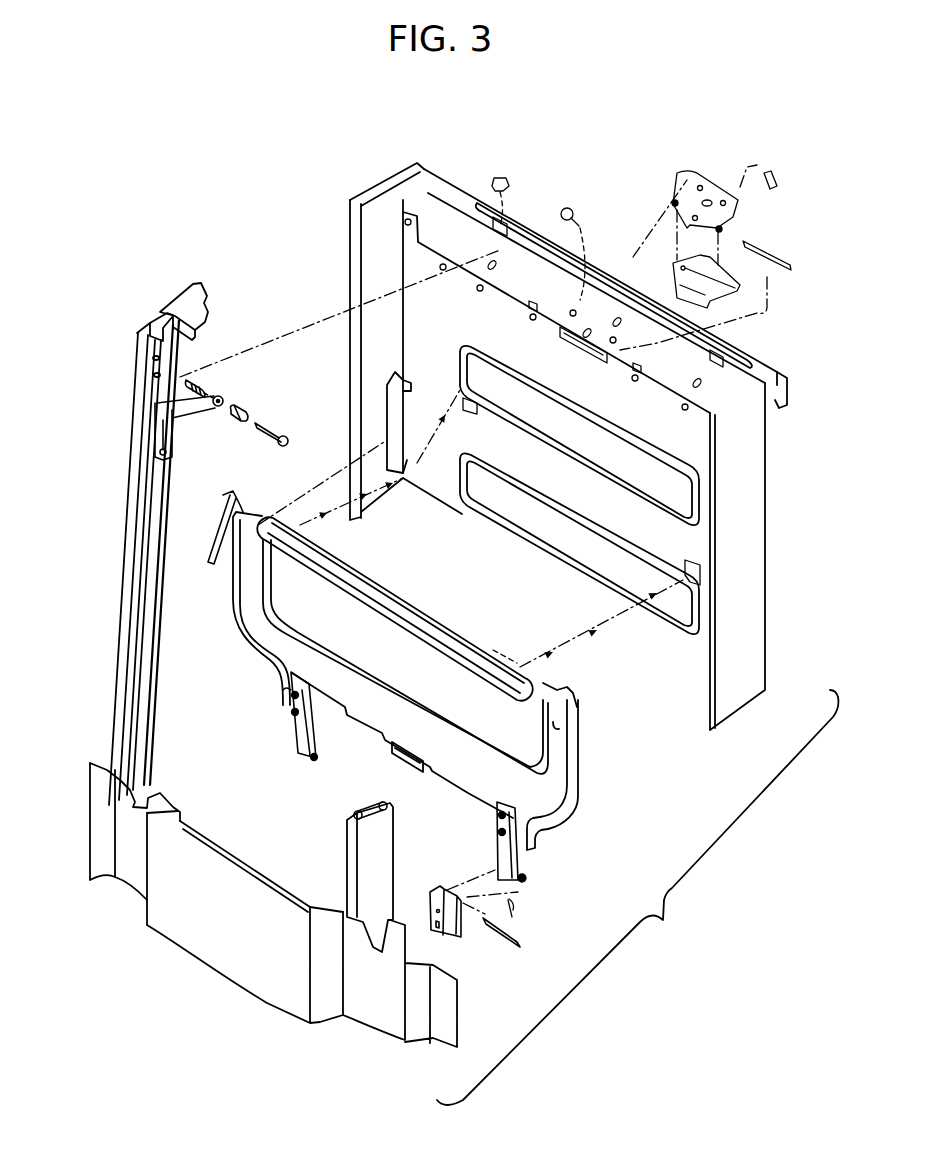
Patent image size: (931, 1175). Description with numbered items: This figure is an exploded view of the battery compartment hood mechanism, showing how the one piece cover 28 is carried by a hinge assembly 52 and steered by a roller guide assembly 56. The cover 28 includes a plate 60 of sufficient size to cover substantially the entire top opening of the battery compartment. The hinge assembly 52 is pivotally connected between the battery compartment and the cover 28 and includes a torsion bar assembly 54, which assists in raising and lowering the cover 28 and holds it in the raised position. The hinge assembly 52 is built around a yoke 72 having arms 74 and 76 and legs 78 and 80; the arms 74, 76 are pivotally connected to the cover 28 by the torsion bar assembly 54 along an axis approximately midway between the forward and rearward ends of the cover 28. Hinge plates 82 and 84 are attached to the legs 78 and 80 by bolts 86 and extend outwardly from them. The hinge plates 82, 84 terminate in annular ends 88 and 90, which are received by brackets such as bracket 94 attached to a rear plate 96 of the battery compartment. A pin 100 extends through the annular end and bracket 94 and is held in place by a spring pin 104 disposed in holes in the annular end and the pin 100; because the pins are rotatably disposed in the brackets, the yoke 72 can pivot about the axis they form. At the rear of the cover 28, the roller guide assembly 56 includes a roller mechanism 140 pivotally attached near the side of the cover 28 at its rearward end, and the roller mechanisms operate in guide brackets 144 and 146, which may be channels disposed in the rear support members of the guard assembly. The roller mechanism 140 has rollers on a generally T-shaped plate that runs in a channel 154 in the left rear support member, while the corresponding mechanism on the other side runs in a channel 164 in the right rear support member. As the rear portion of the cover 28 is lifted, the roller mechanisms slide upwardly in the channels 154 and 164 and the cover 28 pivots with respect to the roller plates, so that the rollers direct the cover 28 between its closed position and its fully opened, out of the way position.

The cover 28 is at (753, 503).
The hinge assembly 52 is at (583, 805).
The torsion bar assembly 54 is at (450, 610).
The roller guide assembly 56 is at (125, 405).
The plate 60 is at (450, 320).
The yoke 72 is at (273, 647).
The arm 74 is at (243, 587).
The arm 76 is at (557, 745).
The leg 78 is at (283, 691).
The leg 80 is at (527, 832).
The hinge plate 82 is at (292, 740).
The hinge plate 84 is at (500, 848).
The bolts 86 is at (293, 695).
The annular end 88 is at (320, 757).
The annular end 90 is at (528, 878).
The bracket 94 is at (458, 927).
The rear plate 96 is at (197, 937).
The pin 100 is at (520, 943).
The spring pin 104 is at (513, 913).
The roller mechanism 140 is at (200, 427).
The guide bracket 144 is at (117, 678).
The guide bracket 146 is at (357, 865).
The channel 154 is at (140, 690).
The channel 164 is at (365, 813).